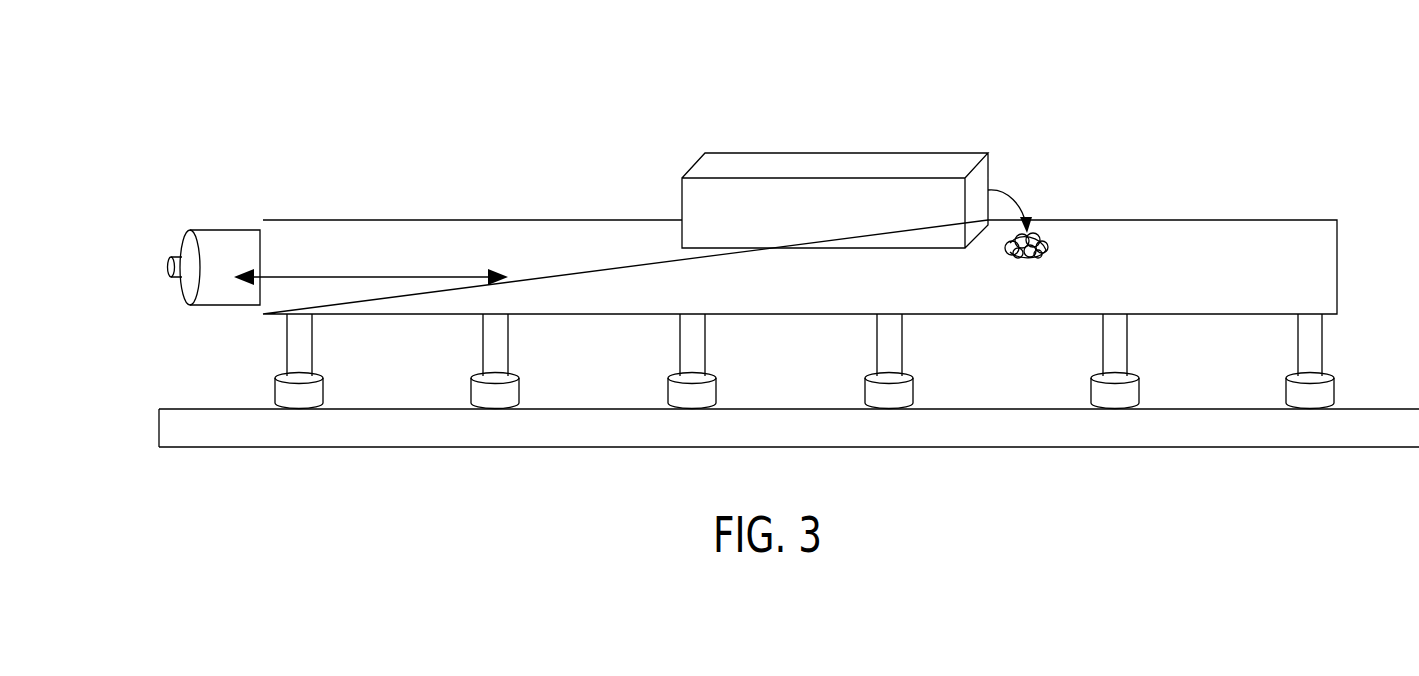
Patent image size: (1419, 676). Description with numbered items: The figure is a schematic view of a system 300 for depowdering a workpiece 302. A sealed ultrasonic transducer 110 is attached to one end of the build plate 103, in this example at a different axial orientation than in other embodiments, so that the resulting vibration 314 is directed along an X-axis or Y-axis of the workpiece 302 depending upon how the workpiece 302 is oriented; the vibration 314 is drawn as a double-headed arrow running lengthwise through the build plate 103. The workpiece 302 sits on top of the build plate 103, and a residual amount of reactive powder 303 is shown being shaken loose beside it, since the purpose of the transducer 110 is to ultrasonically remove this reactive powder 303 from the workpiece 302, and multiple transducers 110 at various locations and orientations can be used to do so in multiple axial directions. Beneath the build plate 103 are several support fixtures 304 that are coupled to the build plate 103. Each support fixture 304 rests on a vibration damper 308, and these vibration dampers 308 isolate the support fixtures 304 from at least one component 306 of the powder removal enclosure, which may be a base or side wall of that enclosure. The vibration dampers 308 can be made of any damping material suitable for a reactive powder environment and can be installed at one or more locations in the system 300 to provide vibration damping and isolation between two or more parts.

The system 300 is at (1227, 86).
The sealed ultrasonic transducer 110 is at (220, 230).
The vibration 314 is at (388, 276).
The build plate 103 is at (490, 220).
The workpiece 302 is at (682, 188).
The reactive powder 303 is at (1038, 232).
The support fixtures 304 is at (287, 348).
The vibration dampers 308 is at (275, 395).
The component 306 is at (160, 428).